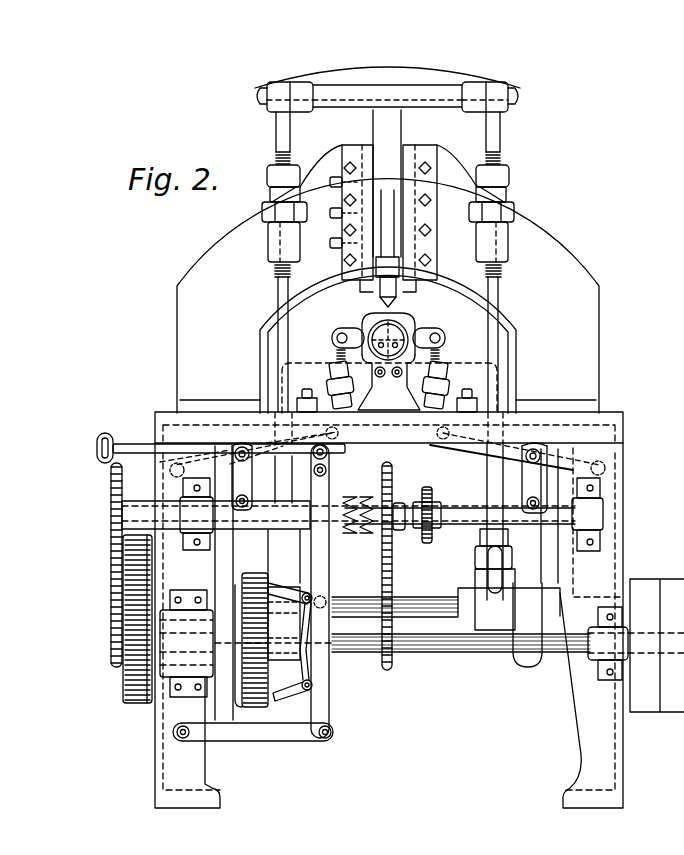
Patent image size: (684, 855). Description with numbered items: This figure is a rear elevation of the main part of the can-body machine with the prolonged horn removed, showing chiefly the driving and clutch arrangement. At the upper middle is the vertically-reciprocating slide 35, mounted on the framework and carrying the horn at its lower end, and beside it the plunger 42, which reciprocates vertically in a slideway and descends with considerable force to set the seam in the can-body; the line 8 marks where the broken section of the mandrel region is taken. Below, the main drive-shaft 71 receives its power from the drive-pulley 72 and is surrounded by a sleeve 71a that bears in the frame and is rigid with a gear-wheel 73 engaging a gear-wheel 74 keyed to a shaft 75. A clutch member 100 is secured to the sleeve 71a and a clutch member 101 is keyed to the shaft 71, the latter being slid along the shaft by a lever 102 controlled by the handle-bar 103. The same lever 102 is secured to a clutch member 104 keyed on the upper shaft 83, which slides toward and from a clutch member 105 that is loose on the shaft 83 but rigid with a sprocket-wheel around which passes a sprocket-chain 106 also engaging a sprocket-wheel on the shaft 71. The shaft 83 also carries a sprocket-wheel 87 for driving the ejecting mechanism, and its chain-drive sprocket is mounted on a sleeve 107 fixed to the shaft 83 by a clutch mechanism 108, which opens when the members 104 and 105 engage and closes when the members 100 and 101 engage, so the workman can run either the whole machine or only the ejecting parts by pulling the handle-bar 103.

The section line 8 8 is at (388, 412).
The plunger 42 is at (380, 296).
The vertically-reciprocating slide 35 is at (407, 305).
The handle-bar 103 is at (101, 432).
The sleeve 107 is at (145, 500).
The clutch mechanism 108 is at (222, 516).
The clutch member 104 is at (345, 496).
The clutch member 105 is at (368, 497).
The shaft 83 is at (452, 509).
The sprocket-wheel 87 is at (425, 538).
The sprocket-chain 106 is at (397, 584).
The gear-wheel 73 is at (138, 652).
The gear-wheel 74 is at (140, 567).
The lever 102 is at (333, 567).
The shaft 75 is at (437, 597).
The main drive-shaft 71 is at (490, 640).
The sleeve 71a is at (222, 690).
The clutch member 101 is at (292, 656).
The clutch member 100 is at (250, 706).
The drive-pulley 72 is at (673, 582).